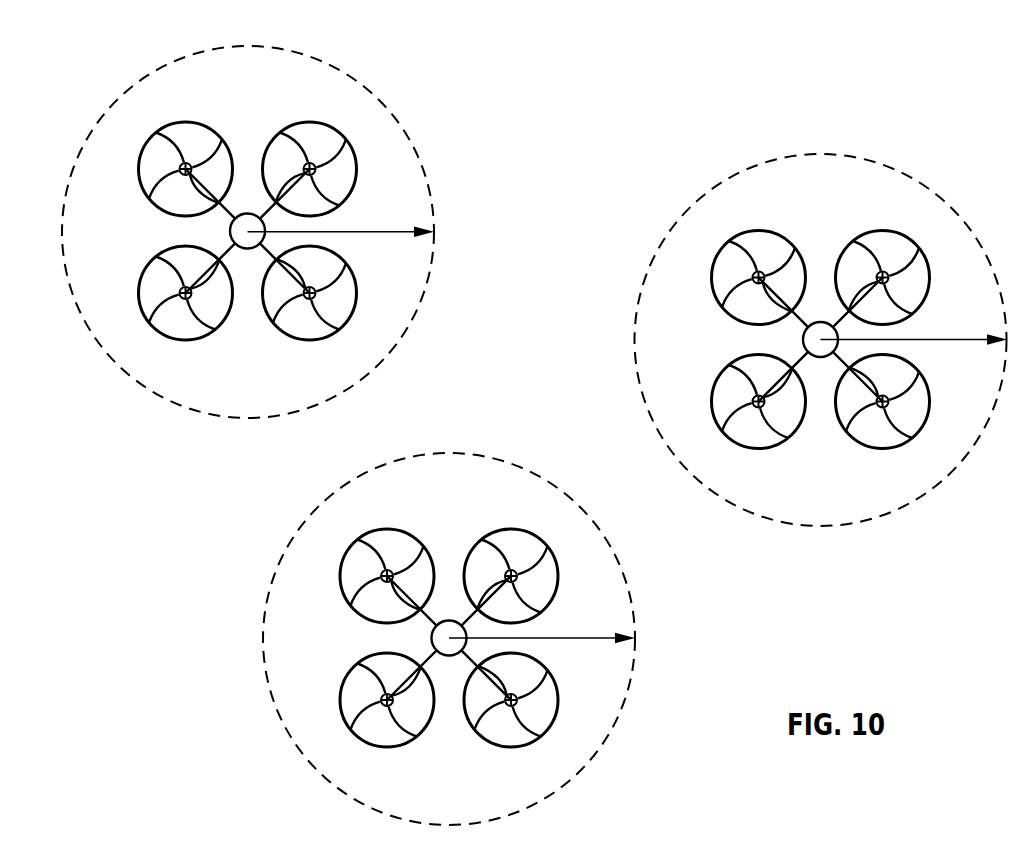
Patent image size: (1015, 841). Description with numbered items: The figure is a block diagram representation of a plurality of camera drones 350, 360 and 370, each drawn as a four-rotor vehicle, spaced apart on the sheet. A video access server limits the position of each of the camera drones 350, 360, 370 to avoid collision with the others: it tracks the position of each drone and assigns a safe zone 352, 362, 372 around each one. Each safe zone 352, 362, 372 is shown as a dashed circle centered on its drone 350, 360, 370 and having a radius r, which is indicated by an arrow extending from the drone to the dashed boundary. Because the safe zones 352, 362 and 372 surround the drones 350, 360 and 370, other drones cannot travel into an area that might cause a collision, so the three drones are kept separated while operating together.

The camera drone 350 is at (265, 206).
The safe zone 352 is at (195, 52).
The camera drone 360 is at (838, 314).
The safe zone 362 is at (768, 159).
The camera drone 370 is at (467, 612).
The safe zone 372 is at (397, 458).